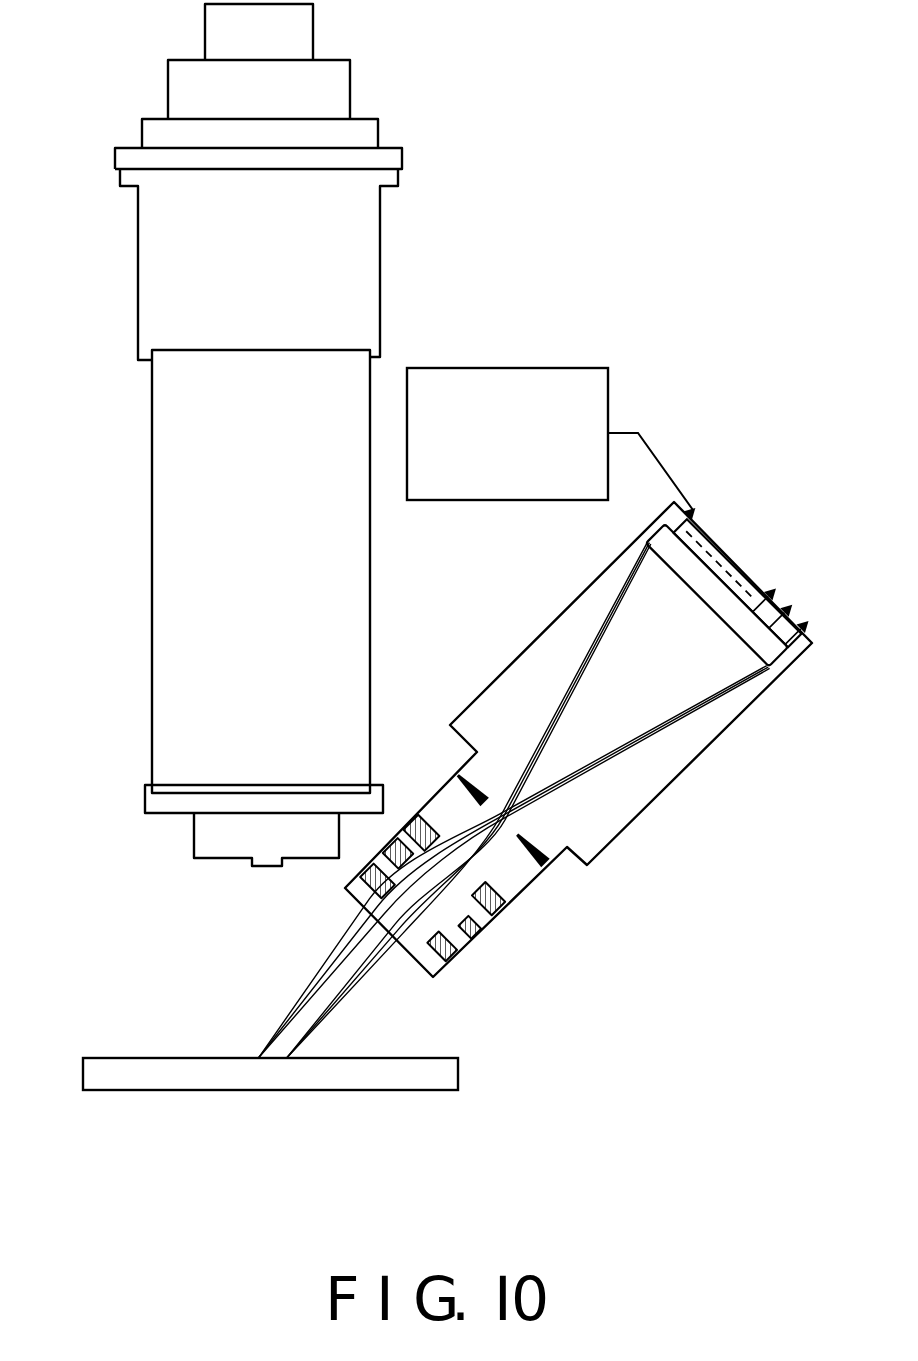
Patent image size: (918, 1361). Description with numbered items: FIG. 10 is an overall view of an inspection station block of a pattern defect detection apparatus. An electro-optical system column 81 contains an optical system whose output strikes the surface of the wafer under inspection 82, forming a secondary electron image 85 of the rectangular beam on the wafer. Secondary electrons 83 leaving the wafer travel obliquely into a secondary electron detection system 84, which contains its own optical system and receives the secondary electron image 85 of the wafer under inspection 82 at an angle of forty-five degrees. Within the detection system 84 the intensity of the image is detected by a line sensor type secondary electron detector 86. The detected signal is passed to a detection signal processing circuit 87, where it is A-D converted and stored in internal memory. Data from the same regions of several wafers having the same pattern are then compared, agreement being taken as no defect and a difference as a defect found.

The electro-optical system column 81 is at (162, 554).
The wafer under inspection 82 is at (369, 1078).
The secondary electrons 83 is at (358, 1002).
The secondary electron detection system 84 is at (736, 834).
The image of the rectangular beam 85 is at (268, 1060).
The line sensor type secondary electron detector 86 is at (689, 560).
The detection signal processing circuit 87 is at (503, 367).